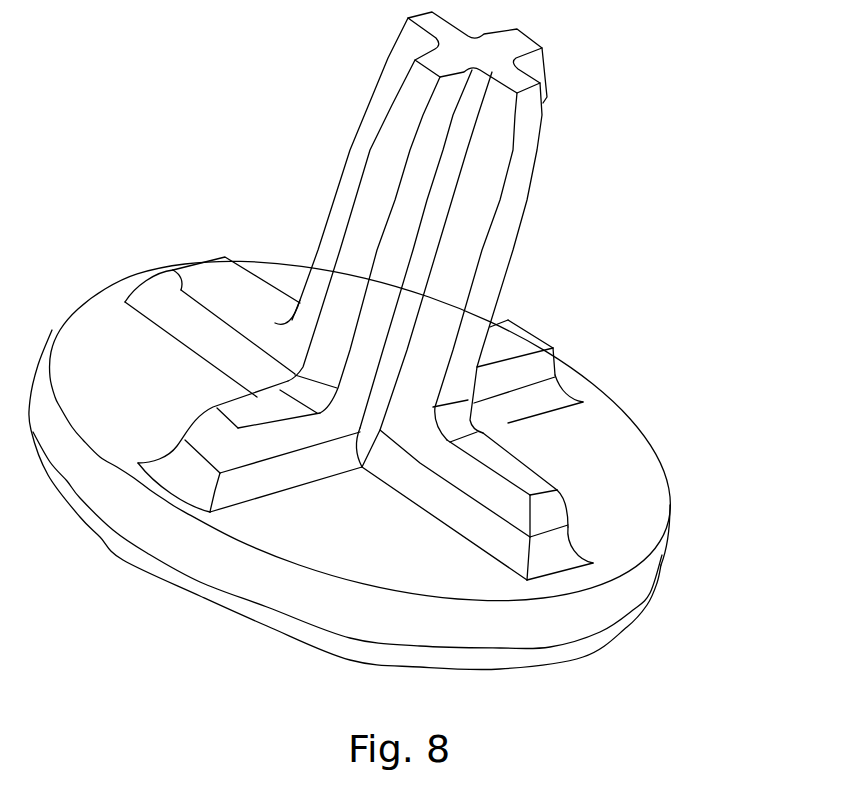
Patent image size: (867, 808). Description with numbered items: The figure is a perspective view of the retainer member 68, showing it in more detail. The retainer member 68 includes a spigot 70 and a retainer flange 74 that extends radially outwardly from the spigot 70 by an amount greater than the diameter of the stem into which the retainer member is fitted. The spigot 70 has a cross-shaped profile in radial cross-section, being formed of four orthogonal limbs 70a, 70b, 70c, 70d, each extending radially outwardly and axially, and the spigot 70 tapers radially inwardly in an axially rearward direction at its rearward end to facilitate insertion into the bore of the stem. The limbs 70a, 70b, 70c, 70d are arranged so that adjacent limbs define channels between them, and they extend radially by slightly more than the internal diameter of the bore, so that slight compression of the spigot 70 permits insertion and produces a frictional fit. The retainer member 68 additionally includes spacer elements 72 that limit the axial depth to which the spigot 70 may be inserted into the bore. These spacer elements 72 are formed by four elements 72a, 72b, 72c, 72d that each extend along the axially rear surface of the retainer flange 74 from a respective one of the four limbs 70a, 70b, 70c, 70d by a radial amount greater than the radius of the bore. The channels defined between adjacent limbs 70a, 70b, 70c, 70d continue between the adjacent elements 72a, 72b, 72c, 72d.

The retainer member 68 is at (380, 499).
The spigot 70 is at (441, 239).
The limb 70a is at (497, 267).
The limb 70b is at (527, 62).
The limb 70c is at (405, 70).
The limb 70d is at (378, 181).
The spacer elements 72 is at (419, 452).
The spacer element 72a is at (510, 513).
The spacer element 72b is at (543, 360).
The spacer element 72c is at (190, 288).
The spacer element 72d is at (250, 482).
The retainer flange 74 is at (448, 570).